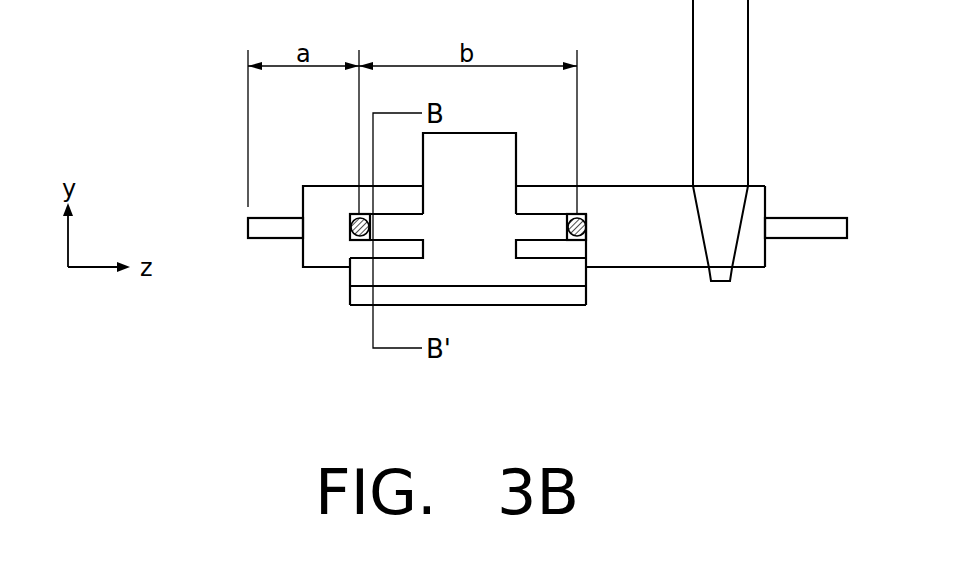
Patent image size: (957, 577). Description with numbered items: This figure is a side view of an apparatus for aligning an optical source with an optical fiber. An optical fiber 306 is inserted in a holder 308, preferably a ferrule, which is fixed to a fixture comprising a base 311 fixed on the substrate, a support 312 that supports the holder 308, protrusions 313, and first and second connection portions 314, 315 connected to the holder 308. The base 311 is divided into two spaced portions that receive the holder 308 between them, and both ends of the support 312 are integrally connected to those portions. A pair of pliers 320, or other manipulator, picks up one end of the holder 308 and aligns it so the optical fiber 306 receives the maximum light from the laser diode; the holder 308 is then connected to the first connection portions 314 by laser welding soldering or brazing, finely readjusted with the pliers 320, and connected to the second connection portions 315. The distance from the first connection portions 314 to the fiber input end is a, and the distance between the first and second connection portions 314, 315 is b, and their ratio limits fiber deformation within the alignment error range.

The optical fiber 306 is at (817, 226).
The holder 308 is at (625, 260).
The base 311 is at (550, 300).
The support 312 is at (493, 133).
The protrusions 313 is at (543, 218).
The first connection portions 314 is at (355, 243).
The second connection portions 315 is at (578, 216).
The pliers 320 is at (740, 109).